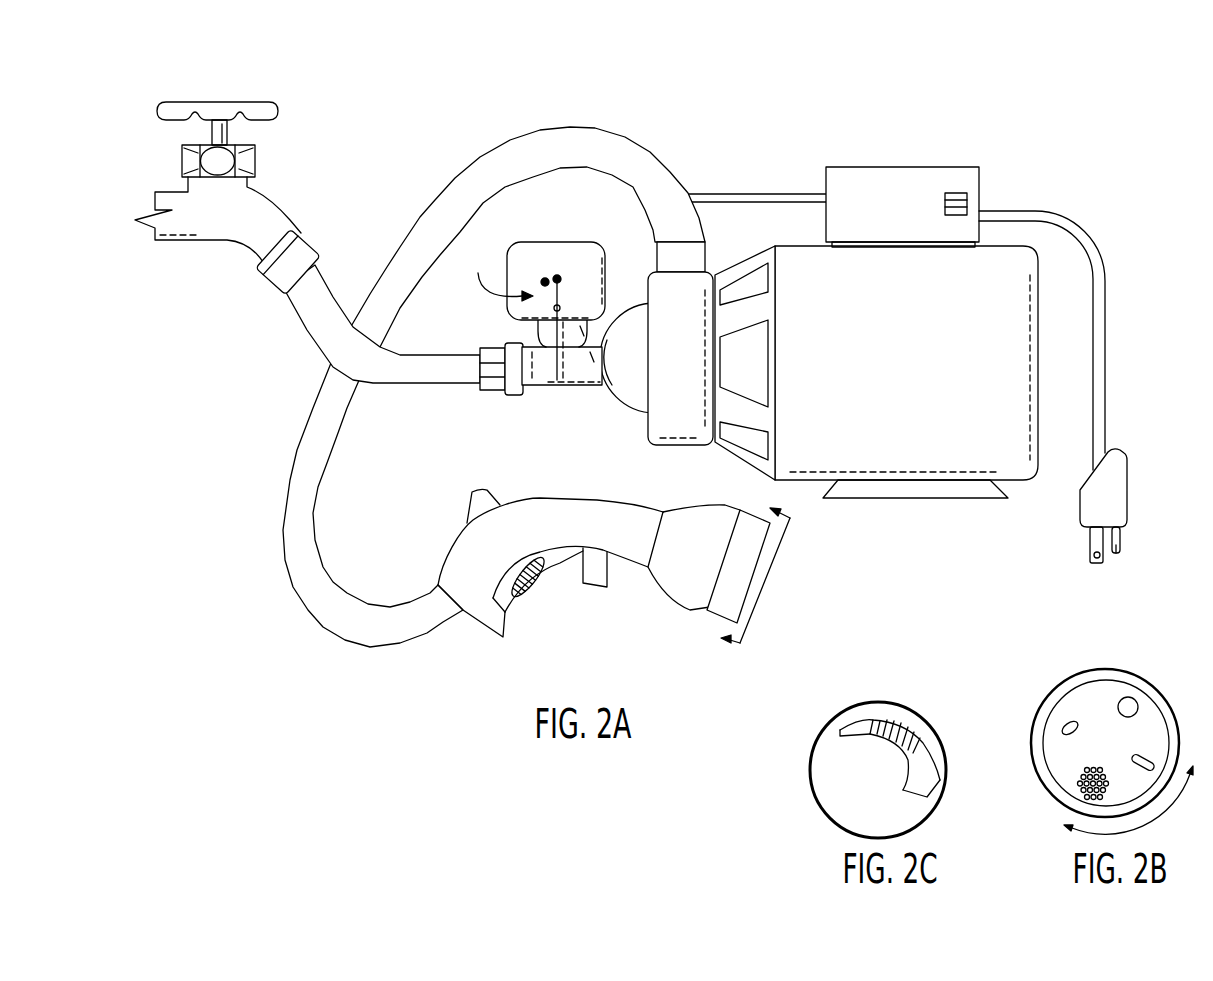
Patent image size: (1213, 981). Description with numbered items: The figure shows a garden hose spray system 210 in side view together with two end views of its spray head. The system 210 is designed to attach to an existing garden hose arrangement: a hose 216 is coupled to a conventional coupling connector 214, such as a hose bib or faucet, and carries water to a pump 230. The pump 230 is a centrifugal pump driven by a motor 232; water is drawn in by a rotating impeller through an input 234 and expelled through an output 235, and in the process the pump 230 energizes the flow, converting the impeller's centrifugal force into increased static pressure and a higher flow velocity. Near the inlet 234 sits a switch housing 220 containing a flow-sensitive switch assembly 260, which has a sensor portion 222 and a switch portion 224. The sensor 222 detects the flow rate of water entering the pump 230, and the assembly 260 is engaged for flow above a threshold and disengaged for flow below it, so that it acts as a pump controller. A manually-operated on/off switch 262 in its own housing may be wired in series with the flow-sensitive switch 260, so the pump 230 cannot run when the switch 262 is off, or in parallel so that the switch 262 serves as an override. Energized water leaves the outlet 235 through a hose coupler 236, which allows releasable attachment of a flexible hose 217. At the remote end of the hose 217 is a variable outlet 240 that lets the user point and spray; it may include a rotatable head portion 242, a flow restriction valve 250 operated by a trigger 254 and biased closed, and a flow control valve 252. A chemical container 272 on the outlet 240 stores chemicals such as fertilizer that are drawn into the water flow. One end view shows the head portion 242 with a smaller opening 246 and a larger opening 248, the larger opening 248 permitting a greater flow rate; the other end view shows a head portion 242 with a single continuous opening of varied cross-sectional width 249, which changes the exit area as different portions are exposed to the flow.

In FIG. 2A, the garden hose spray system 210 is at (631, 398).
In FIG. 2A, the coupling connector 214 is at (265, 288).
In FIG. 2A, the hose 216 is at (395, 362).
In FIG. 2A, the flexible hose 217 is at (452, 205).
In FIG. 2A, the switch housing 220 is at (530, 265).
In FIG. 2A, the sensor portion 222 is at (547, 343).
In FIG. 2A, the switch portion 224 is at (550, 277).
In FIG. 2A, the pump 230 is at (697, 307).
In FIG. 2A, the motor 232 is at (998, 273).
In FIG. 2A, the input 234 is at (619, 416).
In FIG. 2A, the output 235 is at (712, 268).
In FIG. 2A, the hose coupler 236 is at (667, 263).
In FIG. 2A, the variable outlet 240 is at (643, 542).
In FIG. 2A, the rotatable head portion 242 is at (725, 612).
In FIG. 2B, the rotatable head portion 242 is at (1055, 758).
In FIG. 2B, the smaller opening 246 is at (1071, 722).
In FIG. 2B, the larger opening 248 is at (1128, 698).
In FIG. 2C, the single continuous opening with varied cross-sectional width 249 is at (867, 733).
In FIG. 2A, the flow restriction valve 250 is at (464, 625).
In FIG. 2A, the flow control valve 252 is at (470, 507).
In FIG. 2A, the trigger 254 is at (538, 582).
In FIG. 2A, the flow-sensitive switch assembly 260 is at (498, 273).
In FIG. 2A, the manually-operated on/off switch 262 is at (930, 193).
In FIG. 2A, the chemical container 272 is at (598, 572).